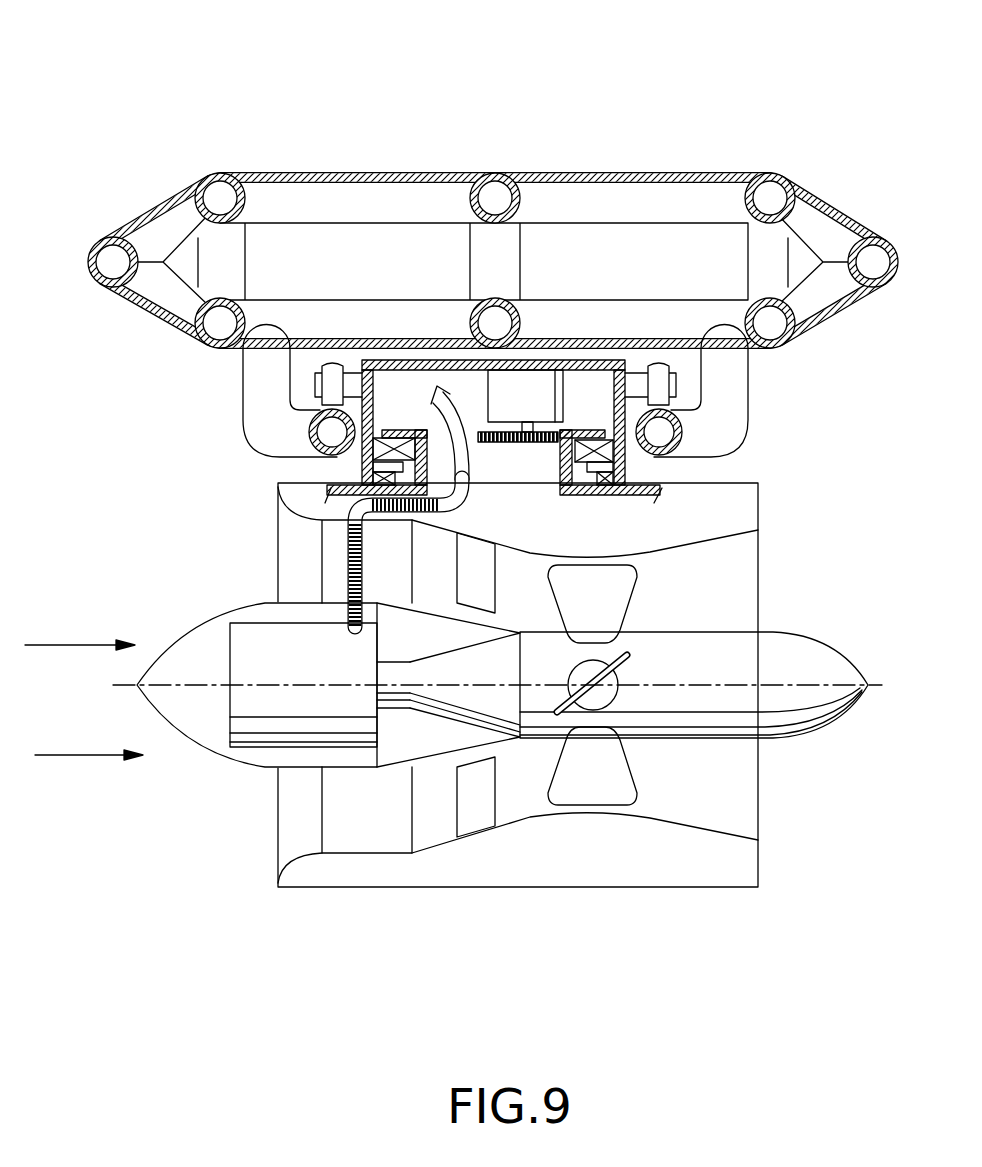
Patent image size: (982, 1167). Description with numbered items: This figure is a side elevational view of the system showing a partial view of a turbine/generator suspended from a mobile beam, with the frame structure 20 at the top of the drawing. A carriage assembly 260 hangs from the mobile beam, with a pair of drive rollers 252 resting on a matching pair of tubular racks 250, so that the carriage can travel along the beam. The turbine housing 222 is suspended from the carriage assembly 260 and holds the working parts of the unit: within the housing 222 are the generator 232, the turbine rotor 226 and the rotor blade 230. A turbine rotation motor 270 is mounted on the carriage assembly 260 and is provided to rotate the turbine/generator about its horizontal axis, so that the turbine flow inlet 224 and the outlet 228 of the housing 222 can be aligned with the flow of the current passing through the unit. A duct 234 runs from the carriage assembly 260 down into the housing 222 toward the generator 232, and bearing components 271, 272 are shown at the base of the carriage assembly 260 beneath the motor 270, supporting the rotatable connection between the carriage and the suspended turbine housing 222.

The propulsion unit frame 20 is at (318, 175).
The turbine housing 222 is at (407, 875).
The turbine flow inlet 224 is at (290, 823).
The turbine rotor 226 is at (760, 652).
The outlet 228 is at (705, 783).
The rotor blade 230 is at (593, 788).
The generator 232 is at (250, 637).
The duct 234 is at (347, 540).
The tubular racks 250 is at (312, 432).
The drive rollers 252 is at (320, 384).
The carriage assembly 260 is at (412, 360).
The turbine rotation motor 270 is at (540, 385).
The bearing 271 is at (577, 450).
The bearing retainer 272 is at (613, 485).